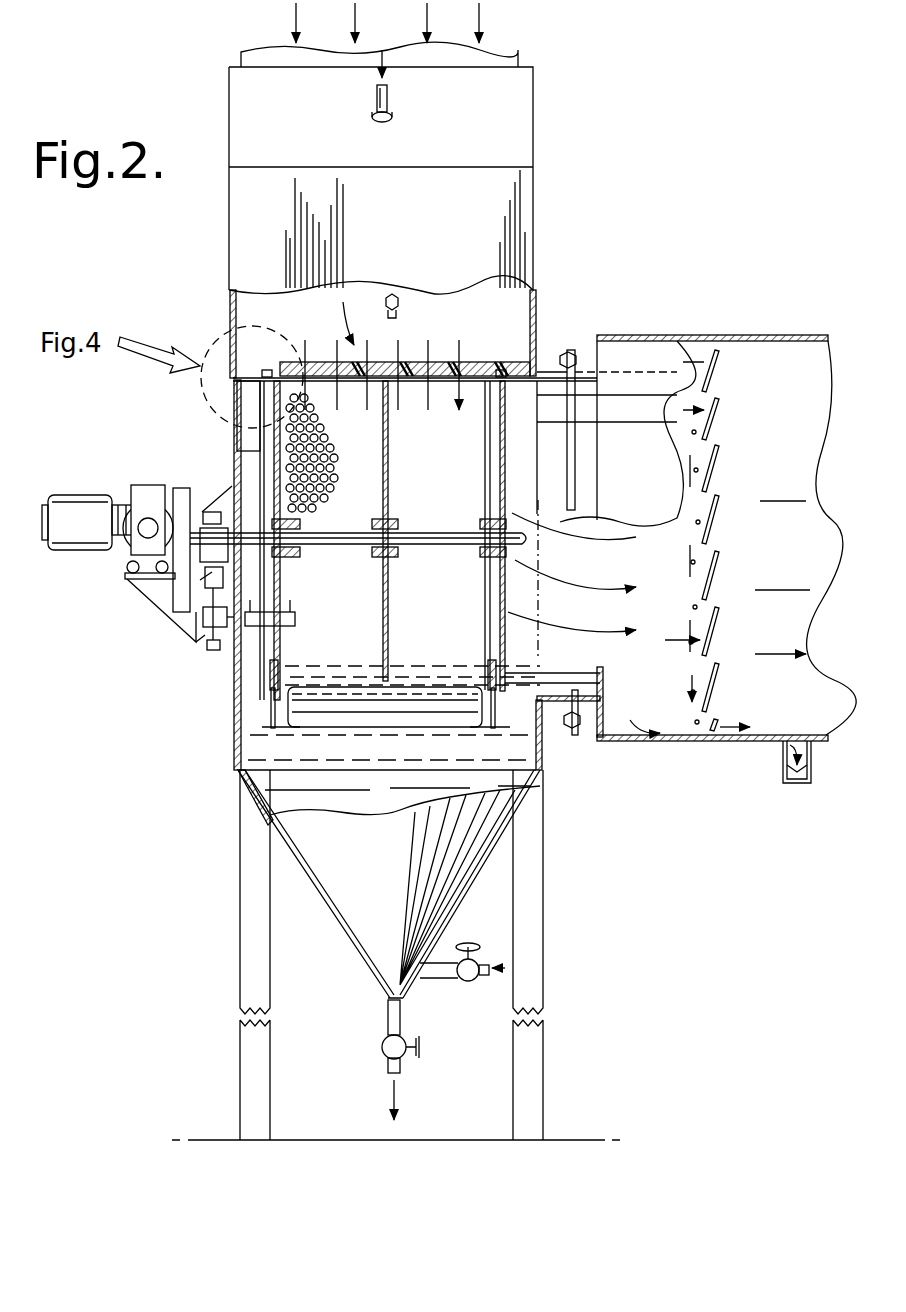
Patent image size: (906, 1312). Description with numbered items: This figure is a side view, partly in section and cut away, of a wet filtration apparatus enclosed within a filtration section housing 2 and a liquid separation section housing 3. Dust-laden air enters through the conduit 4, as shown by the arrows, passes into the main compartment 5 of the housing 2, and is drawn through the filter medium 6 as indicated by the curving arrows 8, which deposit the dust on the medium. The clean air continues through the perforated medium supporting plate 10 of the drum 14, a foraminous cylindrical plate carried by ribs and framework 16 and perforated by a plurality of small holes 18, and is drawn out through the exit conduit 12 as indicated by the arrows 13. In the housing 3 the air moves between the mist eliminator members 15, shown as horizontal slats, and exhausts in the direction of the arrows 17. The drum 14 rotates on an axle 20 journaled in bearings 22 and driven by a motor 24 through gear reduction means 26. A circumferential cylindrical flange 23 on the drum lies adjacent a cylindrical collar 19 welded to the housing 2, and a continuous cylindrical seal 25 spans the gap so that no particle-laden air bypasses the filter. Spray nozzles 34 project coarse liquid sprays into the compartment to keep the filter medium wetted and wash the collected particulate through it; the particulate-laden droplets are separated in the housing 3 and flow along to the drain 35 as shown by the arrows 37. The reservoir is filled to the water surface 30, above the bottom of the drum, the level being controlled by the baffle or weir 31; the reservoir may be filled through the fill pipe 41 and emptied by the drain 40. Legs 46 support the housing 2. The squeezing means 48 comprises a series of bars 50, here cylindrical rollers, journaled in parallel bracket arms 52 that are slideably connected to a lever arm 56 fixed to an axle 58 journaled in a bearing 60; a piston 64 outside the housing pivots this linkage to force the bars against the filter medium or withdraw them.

The filtration section housing 2 is at (536, 196).
The liquid separation section housing 3 is at (700, 335).
The conduit 4 is at (386, 46).
The main compartment 5 is at (442, 223).
The filter medium 6 is at (410, 362).
The curving arrows 8 is at (468, 356).
The perforated medium supporting plate 10 is at (446, 453).
The exit conduit 12 is at (588, 618).
The arrows 13 is at (560, 545).
The drum 14 is at (382, 348).
The mist eliminator members 15 is at (720, 406).
The ribs and framework 16 is at (485, 470).
The arrows 17 is at (775, 612).
The small holes 18 is at (328, 486).
The cylindrical collar 19 is at (232, 377).
The axle 20 is at (425, 533).
The bearings 22 is at (205, 520).
The circumferential cylindrical flange 23 is at (258, 395).
The motor 24 is at (80, 492).
The continuous cylindrical seal 25 is at (268, 369).
The gear reduction means 26 is at (150, 484).
The water surface 30 is at (440, 666).
The baffle or weir 31 is at (616, 690).
The spray nozzles 34 is at (376, 100).
The drain 35 is at (783, 756).
The arrows 37 is at (630, 720).
The drain 40 is at (388, 1015).
The fill pipe 41 is at (468, 985).
The legs 46 is at (240, 935).
The squeezing means 48 is at (315, 734).
The bars 50 is at (432, 705).
The bracket arms 52 is at (275, 722).
The lever arm 56 is at (290, 692).
The axle 58 is at (260, 606).
The bearing 60 is at (232, 645).
The piston 64 is at (196, 642).